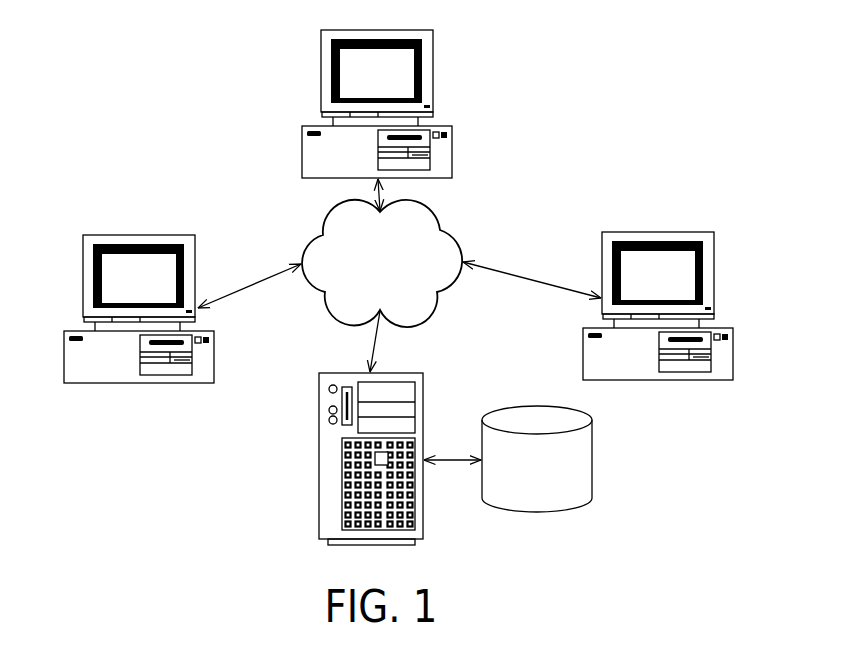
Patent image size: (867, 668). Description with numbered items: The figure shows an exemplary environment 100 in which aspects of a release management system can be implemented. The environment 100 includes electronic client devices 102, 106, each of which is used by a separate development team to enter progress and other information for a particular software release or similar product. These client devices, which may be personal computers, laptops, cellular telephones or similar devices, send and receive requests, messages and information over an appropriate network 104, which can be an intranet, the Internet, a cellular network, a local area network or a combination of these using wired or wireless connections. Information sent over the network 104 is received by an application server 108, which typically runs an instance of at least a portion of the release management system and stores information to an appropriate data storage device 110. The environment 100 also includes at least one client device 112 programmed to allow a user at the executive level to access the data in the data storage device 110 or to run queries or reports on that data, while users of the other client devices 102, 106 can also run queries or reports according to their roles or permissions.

The environment 100 is at (707, 101).
The electronic client device 102 is at (159, 290).
The network 104 is at (399, 296).
The electronic client device 106 is at (679, 288).
The application server 108 is at (319, 458).
The data storage device 110 is at (556, 506).
The client device 112 is at (397, 86).